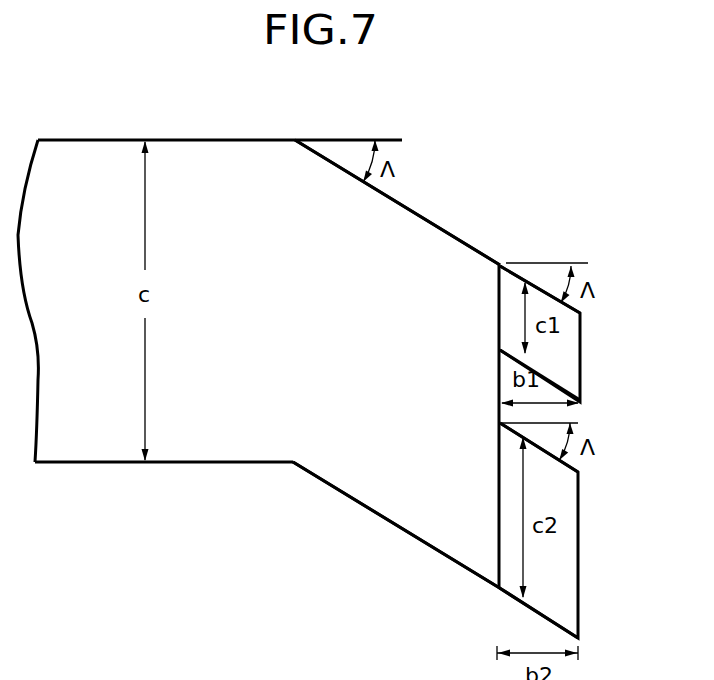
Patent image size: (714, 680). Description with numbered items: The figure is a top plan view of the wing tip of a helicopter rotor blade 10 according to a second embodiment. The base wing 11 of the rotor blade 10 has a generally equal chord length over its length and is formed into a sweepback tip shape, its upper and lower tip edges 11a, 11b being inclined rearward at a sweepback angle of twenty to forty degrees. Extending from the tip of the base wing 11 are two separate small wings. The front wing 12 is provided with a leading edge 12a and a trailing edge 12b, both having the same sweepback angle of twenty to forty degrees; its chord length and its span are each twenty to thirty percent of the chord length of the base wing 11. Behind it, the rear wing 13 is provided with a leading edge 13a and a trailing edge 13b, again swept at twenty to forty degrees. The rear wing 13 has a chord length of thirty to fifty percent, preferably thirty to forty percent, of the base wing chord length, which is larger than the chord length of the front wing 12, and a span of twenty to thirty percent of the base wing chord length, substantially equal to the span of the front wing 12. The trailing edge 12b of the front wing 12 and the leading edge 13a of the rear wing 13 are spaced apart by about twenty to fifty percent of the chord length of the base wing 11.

The rotor blade 10 is at (87, 118).
The base wing 11 is at (368, 500).
The upper inclined surface 11a is at (465, 245).
The lower inclined surface 11b is at (435, 550).
The front wing 12 is at (572, 352).
The leading edge 12a is at (580, 313).
The trailing edge 12b is at (572, 387).
The rear wing 13 is at (568, 602).
The leading edge 13a is at (577, 468).
The trailing edge 13b is at (513, 602).